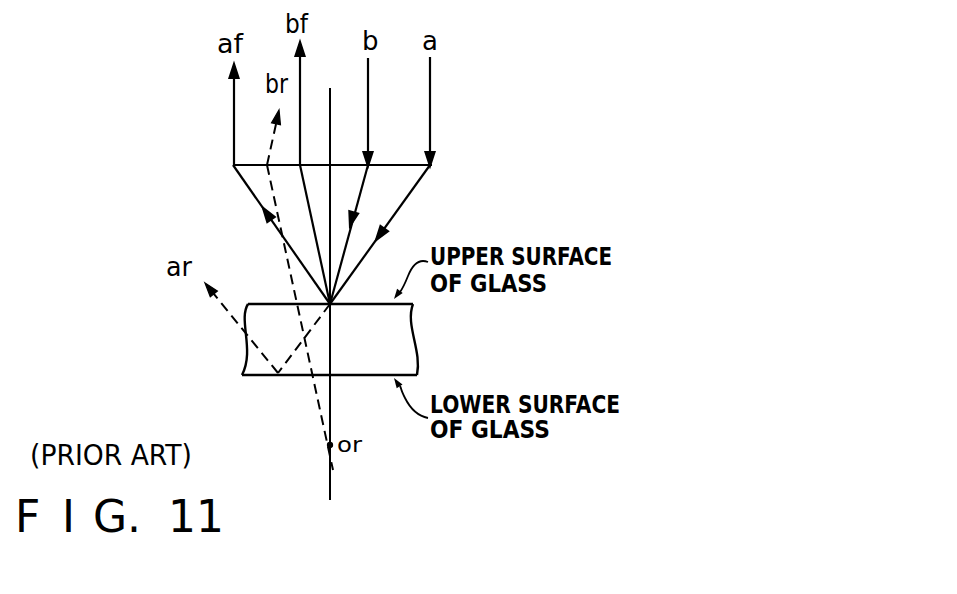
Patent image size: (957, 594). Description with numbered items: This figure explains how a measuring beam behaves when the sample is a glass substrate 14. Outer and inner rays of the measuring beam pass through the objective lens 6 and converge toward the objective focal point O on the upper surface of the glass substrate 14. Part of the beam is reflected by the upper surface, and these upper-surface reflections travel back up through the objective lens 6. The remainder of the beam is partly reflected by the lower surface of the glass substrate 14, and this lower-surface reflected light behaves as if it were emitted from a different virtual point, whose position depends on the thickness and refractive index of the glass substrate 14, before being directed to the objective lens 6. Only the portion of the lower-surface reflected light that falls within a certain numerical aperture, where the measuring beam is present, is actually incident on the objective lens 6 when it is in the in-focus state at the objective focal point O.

The objective lens 6 is at (434, 165).
The glass substrate 14 is at (425, 303).
The objective focal point O is at (340, 316).